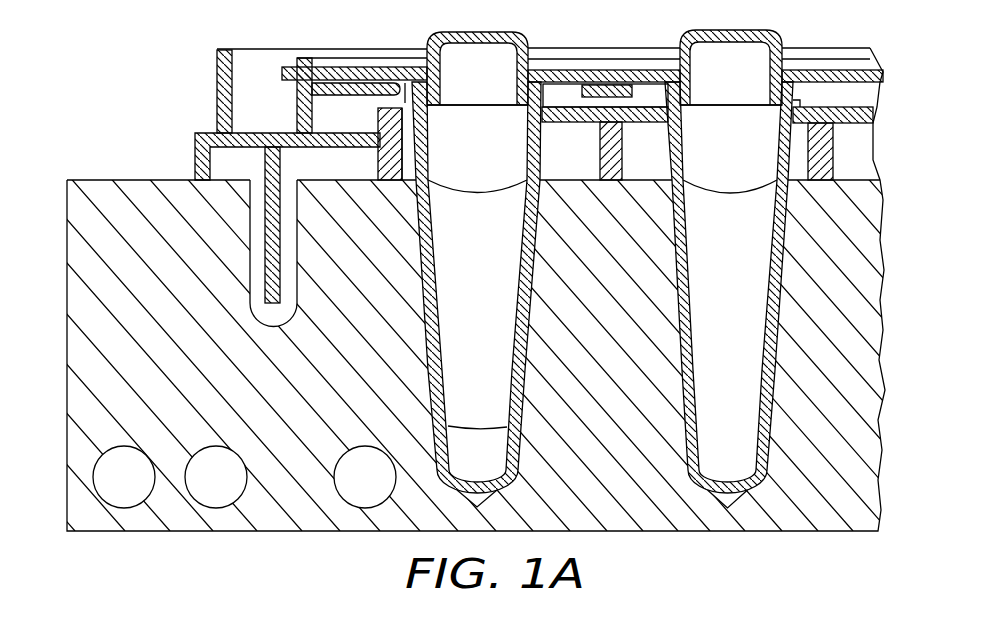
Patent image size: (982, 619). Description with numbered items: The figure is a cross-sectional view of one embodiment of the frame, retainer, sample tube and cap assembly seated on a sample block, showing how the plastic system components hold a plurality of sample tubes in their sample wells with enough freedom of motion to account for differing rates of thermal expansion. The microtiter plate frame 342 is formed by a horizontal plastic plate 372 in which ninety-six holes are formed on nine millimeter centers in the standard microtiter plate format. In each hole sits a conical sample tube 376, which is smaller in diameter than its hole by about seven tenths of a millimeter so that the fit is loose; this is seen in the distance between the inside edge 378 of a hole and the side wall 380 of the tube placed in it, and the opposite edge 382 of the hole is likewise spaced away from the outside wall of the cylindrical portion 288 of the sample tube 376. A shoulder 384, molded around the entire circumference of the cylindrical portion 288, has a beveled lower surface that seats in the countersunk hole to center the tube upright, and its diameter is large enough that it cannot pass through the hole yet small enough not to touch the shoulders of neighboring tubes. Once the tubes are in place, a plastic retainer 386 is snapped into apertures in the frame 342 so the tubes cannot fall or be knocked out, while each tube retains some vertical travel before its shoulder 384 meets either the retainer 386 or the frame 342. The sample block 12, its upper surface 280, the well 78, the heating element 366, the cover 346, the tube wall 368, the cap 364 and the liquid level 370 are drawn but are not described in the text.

The substrate body 12 is at (63, 181).
The upper surface 280 is at (164, 178).
The well 78 is at (273, 313).
The heating element 366 is at (267, 268).
The microtiter plate frame 342 is at (217, 113).
The cover plate 346 is at (277, 47).
The plastic retainer 386 is at (295, 92).
The shoulder 384 is at (403, 78).
The inside edge of hole 378 is at (411, 172).
The side wall of sample tube 380 is at (410, 187).
The sample tube 368 is at (532, 313).
The cap 364 is at (500, 32).
The cylindrical portion 288 is at (428, 142).
The sample tube 376 is at (490, 182).
The liquid level 370 is at (453, 426).
The opposite edge of hole 382 is at (579, 124).
The horizontal plastic plate 372 is at (838, 106).